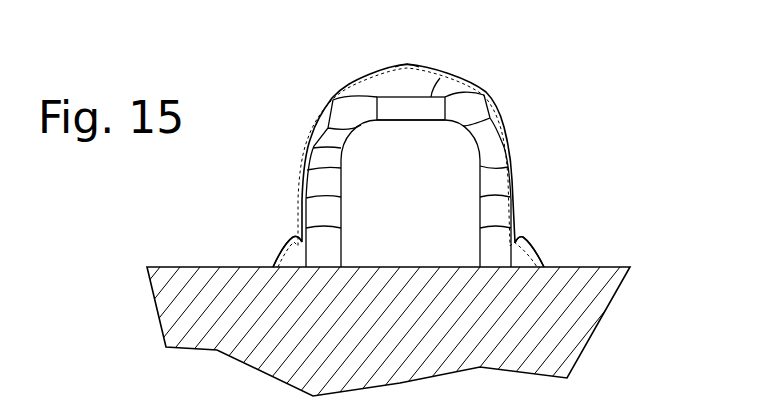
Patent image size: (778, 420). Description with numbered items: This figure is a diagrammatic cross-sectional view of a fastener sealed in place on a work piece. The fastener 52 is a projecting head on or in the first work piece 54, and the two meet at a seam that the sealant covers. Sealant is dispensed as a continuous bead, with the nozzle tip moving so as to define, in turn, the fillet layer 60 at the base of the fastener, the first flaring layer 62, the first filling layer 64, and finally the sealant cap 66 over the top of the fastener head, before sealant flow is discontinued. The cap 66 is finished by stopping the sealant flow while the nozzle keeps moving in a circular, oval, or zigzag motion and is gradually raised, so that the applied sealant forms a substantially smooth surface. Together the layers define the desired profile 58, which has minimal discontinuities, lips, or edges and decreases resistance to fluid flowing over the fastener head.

The second work piece 52 is at (432, 90).
The first work piece 54 is at (612, 267).
The profile 58 is at (337, 96).
The fillet layer 60 is at (302, 238).
The first flaring layer 62 is at (275, 261).
The first filling layer 64 is at (307, 197).
The sealant cap 66 is at (417, 66).